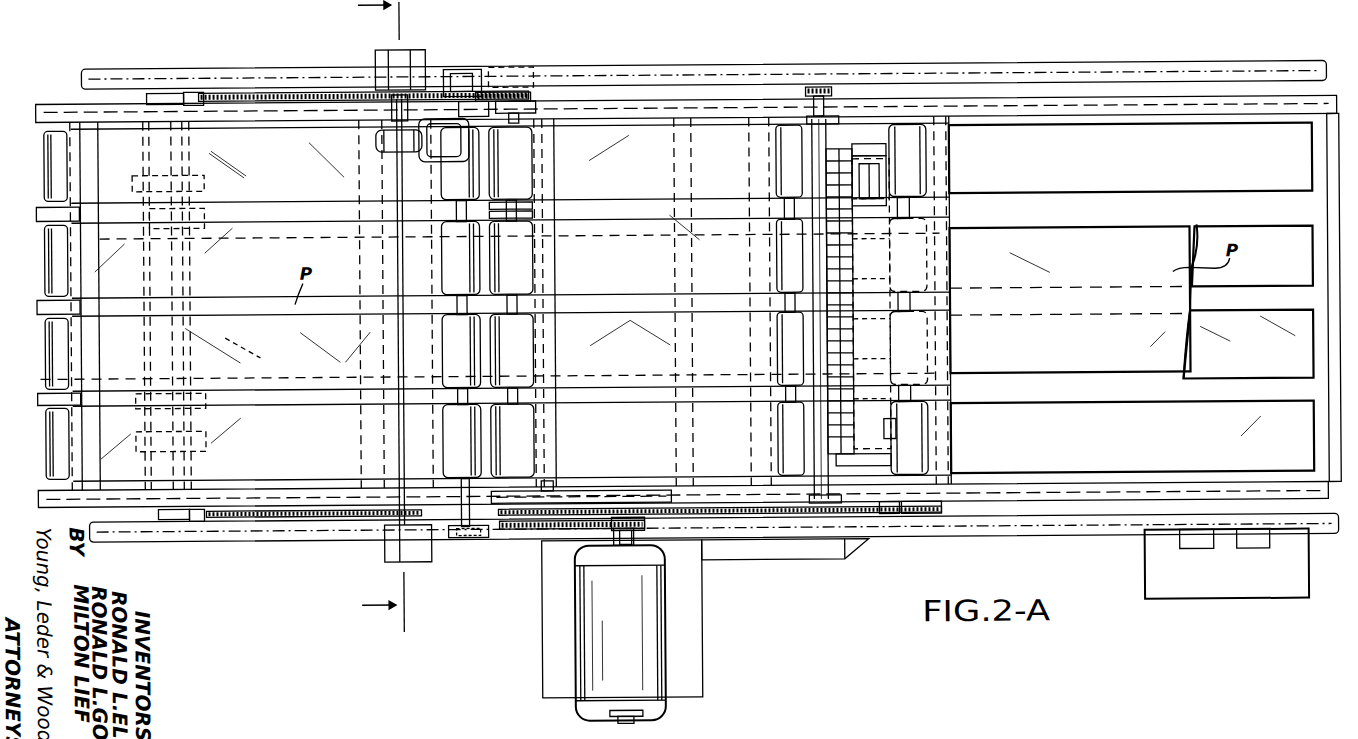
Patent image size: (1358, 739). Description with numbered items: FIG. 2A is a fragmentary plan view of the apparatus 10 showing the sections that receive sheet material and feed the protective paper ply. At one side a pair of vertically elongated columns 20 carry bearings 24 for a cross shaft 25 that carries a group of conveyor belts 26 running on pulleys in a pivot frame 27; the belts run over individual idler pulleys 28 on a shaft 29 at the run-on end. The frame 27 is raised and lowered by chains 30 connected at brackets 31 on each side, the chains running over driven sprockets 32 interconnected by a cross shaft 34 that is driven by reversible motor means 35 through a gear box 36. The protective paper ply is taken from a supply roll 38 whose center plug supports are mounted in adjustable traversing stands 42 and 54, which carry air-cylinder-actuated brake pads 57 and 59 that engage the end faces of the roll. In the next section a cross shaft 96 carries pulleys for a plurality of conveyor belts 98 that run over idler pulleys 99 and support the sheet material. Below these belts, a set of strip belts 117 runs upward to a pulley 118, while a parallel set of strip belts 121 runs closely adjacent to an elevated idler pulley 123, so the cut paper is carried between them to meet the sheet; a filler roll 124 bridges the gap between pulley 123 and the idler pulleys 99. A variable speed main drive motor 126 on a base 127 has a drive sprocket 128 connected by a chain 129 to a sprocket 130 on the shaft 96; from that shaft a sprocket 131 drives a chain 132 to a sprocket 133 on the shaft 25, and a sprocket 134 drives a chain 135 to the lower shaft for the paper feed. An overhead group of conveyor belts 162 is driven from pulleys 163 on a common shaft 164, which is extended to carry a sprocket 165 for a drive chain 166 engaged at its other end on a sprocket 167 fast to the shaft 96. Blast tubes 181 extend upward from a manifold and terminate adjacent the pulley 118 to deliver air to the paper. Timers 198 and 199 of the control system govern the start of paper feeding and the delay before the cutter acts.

The conveyor system section line 10 is at (364, 316).
The vertically elongated column 20 is at (412, 52).
The bearing 24 is at (492, 66).
The cross shaft 25 is at (425, 293).
The conveyor belt 26 is at (272, 171).
The pivot frame 27 is at (62, 100).
The idler pulley 28 is at (82, 183).
The shaft 29 is at (40, 295).
The chain 30 is at (278, 90).
The bracket 31 is at (195, 89).
The driven sprocket 32 is at (410, 92).
The cross shaft 34 is at (398, 301).
The reversible motor means 35 is at (447, 156).
The gear box 36 is at (378, 138).
The supply roll 38 is at (248, 350).
The adjustable traversing stand 42 is at (212, 174).
The adjustable traversing stand 54 is at (225, 448).
The brake pad 57 is at (207, 213).
The brake pad 59 is at (207, 402).
The cross shaft 96 is at (517, 222).
The conveyor belt 98 is at (647, 184).
The idler pulley 99 is at (770, 176).
The strip belt 117 is at (872, 190).
The pulley 118 is at (870, 150).
The strip belt 121 is at (830, 246).
The elevated idler pulley 123 is at (842, 152).
The filler roll 124 is at (828, 303).
The variable speed main drive motor 126 is at (630, 671).
The base 127 is at (560, 662).
The drive sprocket 128 is at (644, 523).
The chain 129 is at (545, 540).
The sprocket 130 is at (513, 532).
The sprocket 131 is at (527, 104).
The chain 132 is at (490, 100).
The sprocket 133 is at (465, 68).
The sprocket 134 is at (535, 92).
The chain 135 is at (478, 118).
The conveyor belt 162 is at (1192, 166).
The pulley 163 is at (930, 180).
The shaft 164 is at (912, 210).
The sprocket 165 is at (925, 520).
The drive chain 166 is at (753, 540).
The sprocket 167 is at (547, 490).
The blast tube 181 is at (895, 440).
The transistorized timer 198 is at (1195, 552).
The timer 199 is at (1252, 552).